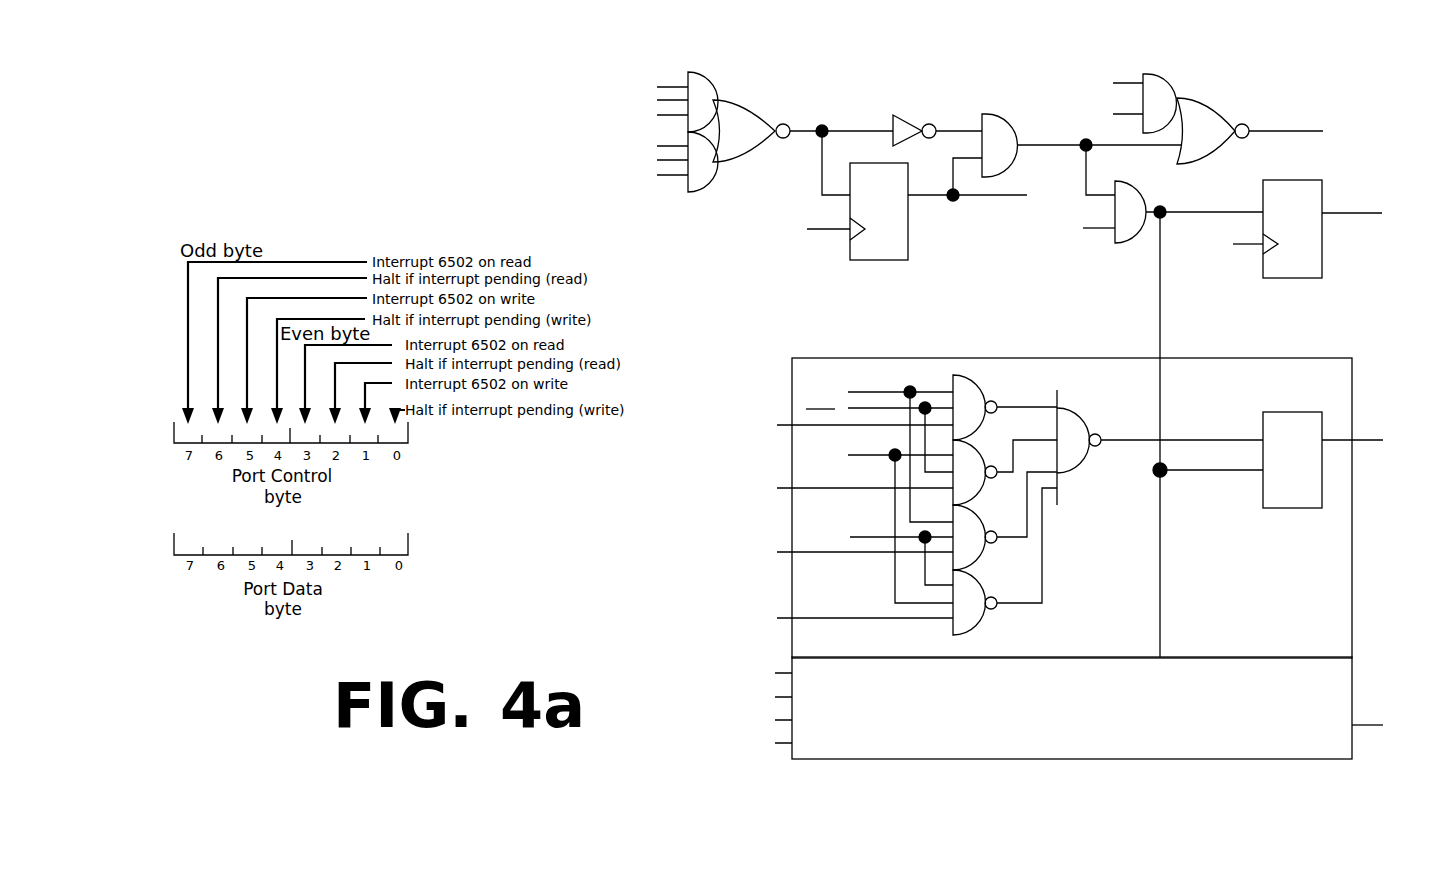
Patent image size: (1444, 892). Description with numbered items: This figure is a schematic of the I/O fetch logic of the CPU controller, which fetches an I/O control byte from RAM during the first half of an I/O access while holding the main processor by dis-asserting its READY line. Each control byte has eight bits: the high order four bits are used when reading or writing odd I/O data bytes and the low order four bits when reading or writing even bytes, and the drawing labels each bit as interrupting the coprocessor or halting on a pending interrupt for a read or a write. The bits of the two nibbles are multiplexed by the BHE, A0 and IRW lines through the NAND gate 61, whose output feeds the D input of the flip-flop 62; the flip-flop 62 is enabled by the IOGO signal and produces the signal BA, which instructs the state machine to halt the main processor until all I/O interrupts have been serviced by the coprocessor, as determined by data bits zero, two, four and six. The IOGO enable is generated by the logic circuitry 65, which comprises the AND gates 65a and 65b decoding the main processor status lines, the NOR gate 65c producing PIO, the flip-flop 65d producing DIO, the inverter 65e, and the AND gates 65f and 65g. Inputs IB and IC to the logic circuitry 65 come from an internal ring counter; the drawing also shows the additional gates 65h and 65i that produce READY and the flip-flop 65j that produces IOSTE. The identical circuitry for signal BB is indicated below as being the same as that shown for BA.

The logic circuitry 65 is at (1031, 234).
The AND gate 65a is at (710, 90).
The AND gate 65b is at (700, 182).
The NOR gate 65c is at (760, 143).
The flip-flop 65d is at (885, 257).
The inverter 65e is at (890, 123).
The AND gate 65f is at (1013, 137).
The AND gate 65g is at (1125, 238).
The AND gate 65h is at (1167, 92).
The NOR gate producing READY 65i is at (1213, 152).
The D flip-flop producing IOSTE 65j is at (1300, 275).
The NAND gate 61 is at (1019, 389).
The flip-flop 62 is at (1285, 503).